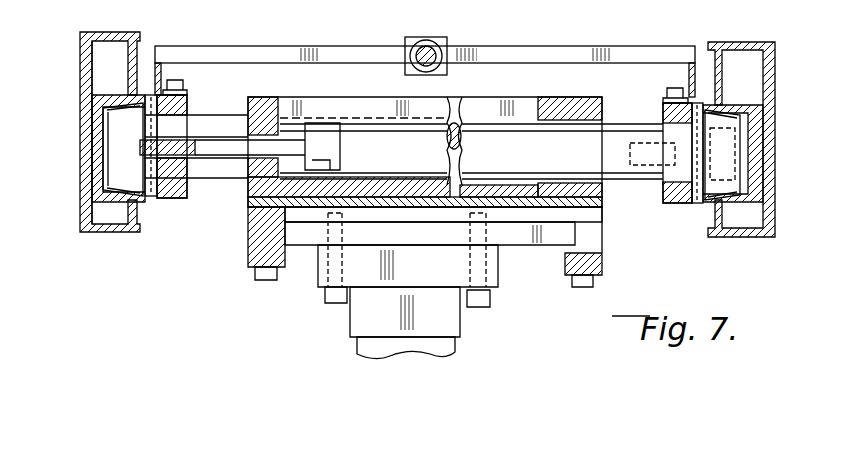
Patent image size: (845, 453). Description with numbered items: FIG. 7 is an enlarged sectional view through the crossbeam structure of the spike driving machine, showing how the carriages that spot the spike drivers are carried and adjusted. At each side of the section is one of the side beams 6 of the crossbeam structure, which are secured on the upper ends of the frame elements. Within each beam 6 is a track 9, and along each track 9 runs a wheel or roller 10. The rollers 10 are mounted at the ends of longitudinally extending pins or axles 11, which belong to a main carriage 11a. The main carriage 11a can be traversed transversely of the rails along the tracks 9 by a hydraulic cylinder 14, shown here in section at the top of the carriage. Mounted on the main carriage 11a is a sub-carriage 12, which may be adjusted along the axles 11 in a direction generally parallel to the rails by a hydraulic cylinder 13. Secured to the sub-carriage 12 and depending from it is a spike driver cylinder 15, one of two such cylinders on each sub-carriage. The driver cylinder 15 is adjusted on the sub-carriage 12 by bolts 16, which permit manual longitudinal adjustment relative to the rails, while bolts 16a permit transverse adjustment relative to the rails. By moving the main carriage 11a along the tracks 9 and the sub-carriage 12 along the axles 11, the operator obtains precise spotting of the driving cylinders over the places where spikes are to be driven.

The side beam 6 is at (82, 73).
The track 9 is at (97, 152).
The wheel or roller 10 is at (115, 160).
The pin or axle 11 is at (237, 177).
The main carriage 11a is at (517, 85).
The sub-carriage 12 is at (248, 105).
The hydraulic cylinder 13 is at (362, 137).
The hydraulic cylinder 14 is at (437, 37).
The spike driver cylinder 15 is at (357, 348).
The bolt 16 is at (328, 306).
The bolt 16a is at (267, 280).